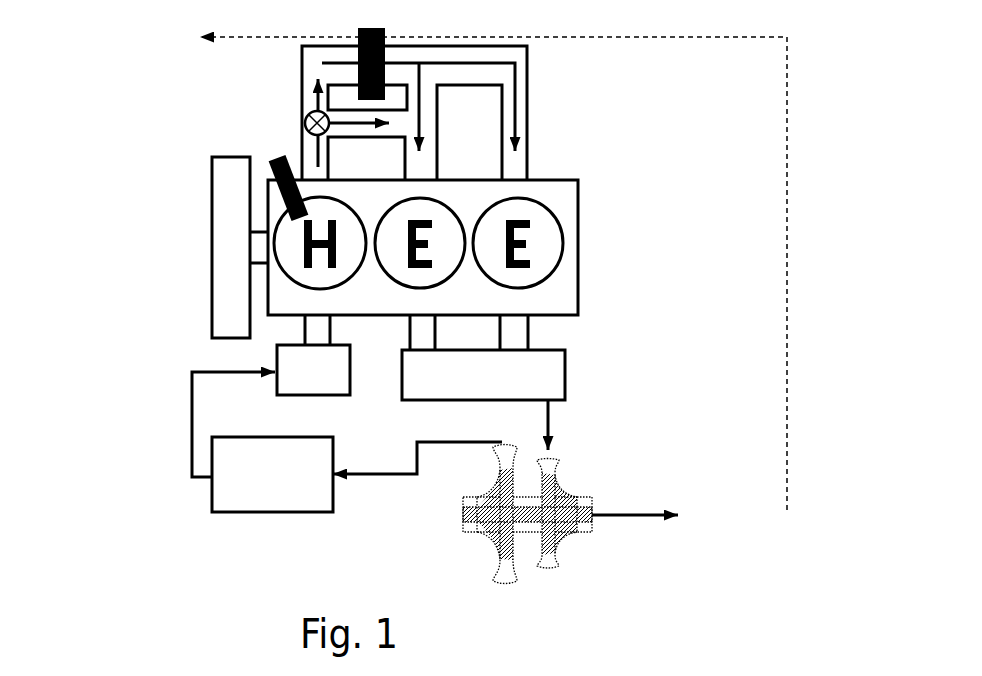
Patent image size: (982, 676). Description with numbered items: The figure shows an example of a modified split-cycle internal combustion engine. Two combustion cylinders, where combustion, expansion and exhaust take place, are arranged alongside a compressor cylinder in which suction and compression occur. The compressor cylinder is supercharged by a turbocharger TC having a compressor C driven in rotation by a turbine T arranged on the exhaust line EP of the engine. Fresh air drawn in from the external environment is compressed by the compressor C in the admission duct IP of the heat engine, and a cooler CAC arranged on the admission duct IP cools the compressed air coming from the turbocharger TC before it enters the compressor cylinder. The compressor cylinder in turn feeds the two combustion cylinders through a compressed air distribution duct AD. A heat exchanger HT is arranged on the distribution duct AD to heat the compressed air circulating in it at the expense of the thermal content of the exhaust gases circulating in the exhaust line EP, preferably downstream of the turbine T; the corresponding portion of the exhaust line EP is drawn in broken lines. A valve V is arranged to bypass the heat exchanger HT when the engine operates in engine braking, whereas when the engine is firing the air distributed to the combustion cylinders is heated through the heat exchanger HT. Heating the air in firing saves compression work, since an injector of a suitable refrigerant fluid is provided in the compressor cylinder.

The heat exchanger HT is at (385, 30).
The valve V is at (305, 118).
The compressed air distribution duct AD is at (230, 132).
The injector J is at (268, 182).
The admission duct IP is at (190, 442).
The cooler CAC is at (246, 490).
The turbocharger TC is at (493, 534).
The compressor C is at (464, 552).
The turbine T is at (544, 478).
The exhaust line EP is at (718, 513).